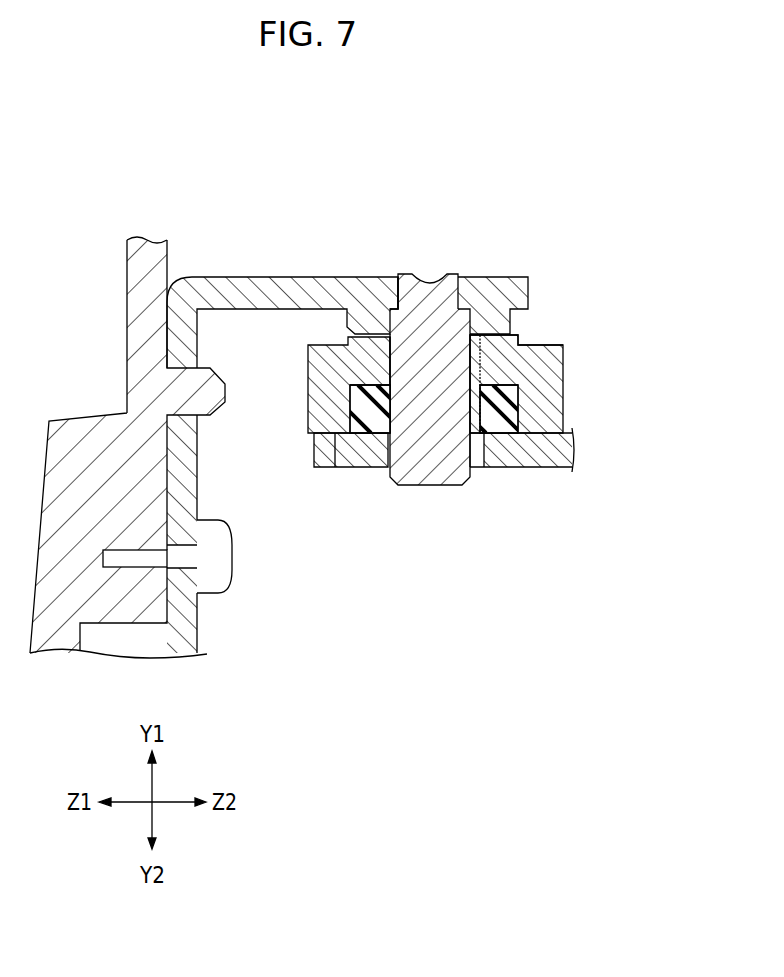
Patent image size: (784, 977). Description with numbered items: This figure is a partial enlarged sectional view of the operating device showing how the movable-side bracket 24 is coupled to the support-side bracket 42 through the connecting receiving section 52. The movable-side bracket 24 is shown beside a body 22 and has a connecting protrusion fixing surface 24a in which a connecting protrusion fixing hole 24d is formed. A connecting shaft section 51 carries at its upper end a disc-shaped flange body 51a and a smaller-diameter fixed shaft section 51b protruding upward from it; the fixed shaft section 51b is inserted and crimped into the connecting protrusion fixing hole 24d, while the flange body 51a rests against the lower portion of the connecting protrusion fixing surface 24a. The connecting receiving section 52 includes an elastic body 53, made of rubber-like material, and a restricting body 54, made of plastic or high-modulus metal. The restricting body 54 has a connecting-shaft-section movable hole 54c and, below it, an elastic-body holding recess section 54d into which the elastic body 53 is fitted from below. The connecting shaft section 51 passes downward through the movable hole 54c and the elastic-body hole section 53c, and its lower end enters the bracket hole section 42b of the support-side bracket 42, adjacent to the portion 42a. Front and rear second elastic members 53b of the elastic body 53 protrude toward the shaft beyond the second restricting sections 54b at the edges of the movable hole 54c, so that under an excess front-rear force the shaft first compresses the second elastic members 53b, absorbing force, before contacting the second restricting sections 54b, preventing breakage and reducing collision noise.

The housing body 22 is at (137, 270).
The movable-side bracket 24 is at (187, 320).
The connecting protrusion fixing surface 24a is at (273, 288).
The connecting protrusion fixing hole 24d is at (386, 278).
The connecting shaft section 51 is at (467, 462).
The flange body 51a is at (355, 318).
The fixed shaft section 51b is at (420, 298).
The connecting receiving section 52 is at (627, 262).
The elastic body 53 is at (547, 397).
The second elastic members 53b is at (453, 437).
The elastic-body hole section 53c is at (506, 357).
The restricting body 54 is at (521, 396).
The second restricting sections 54b is at (481, 385).
The connecting-shaft-section movable hole 54c is at (482, 382).
The elastic-body holding recess section 54d is at (350, 405).
The support-side bracket 42 is at (551, 446).
The plate portion 42a is at (518, 455).
The bracket hole section 42b is at (480, 447).